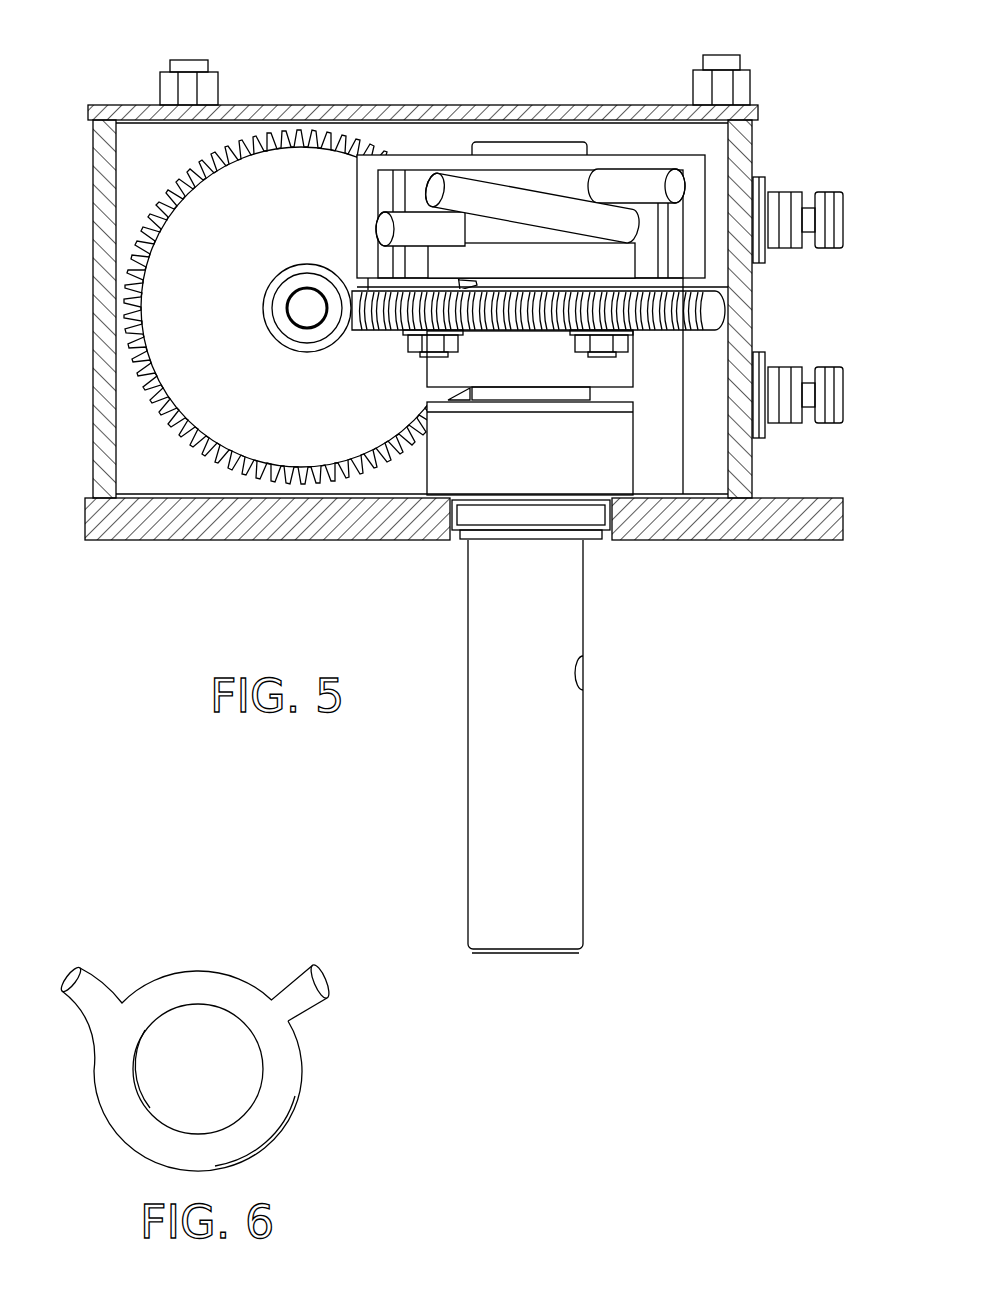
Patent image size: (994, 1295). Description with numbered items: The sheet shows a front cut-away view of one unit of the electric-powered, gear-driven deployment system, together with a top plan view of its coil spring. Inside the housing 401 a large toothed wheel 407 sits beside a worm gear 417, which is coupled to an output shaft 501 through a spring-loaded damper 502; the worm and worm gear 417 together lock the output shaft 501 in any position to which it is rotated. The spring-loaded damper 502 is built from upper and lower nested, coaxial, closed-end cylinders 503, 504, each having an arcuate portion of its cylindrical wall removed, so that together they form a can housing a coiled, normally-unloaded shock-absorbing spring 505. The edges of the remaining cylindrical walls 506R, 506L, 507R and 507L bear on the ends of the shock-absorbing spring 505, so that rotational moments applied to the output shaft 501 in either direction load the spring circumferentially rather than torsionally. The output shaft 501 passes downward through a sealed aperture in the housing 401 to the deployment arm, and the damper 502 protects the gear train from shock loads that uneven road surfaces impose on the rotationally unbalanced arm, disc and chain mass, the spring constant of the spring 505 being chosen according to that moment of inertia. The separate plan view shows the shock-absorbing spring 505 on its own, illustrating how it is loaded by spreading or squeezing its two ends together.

In FIG. 5, the housing 401 is at (95, 183).
In FIG. 5, the drive gear 407 is at (137, 363).
In FIG. 5, the worm gear 417 is at (703, 307).
In FIG. 5, the output shaft 501 is at (491, 788).
In FIG. 5, the spring-loaded damper 502 is at (457, 140).
In FIG. 5, the upper closed-end cylinder 503 is at (653, 158).
In FIG. 5, the lower closed-end cylinder 504 is at (645, 254).
In FIG. 5, the shock-absorbing spring 505 is at (535, 207).
In FIG. 6, the shock-absorbing spring 505 is at (195, 988).
In FIG. 5, the remaining cylindrical wall edge 506L is at (383, 202).
In FIG. 5, the remaining cylindrical wall edge 506R is at (676, 252).
In FIG. 5, the remaining cylindrical wall edge 507L is at (393, 160).
In FIG. 5, the remaining cylindrical wall edge 507R is at (662, 237).